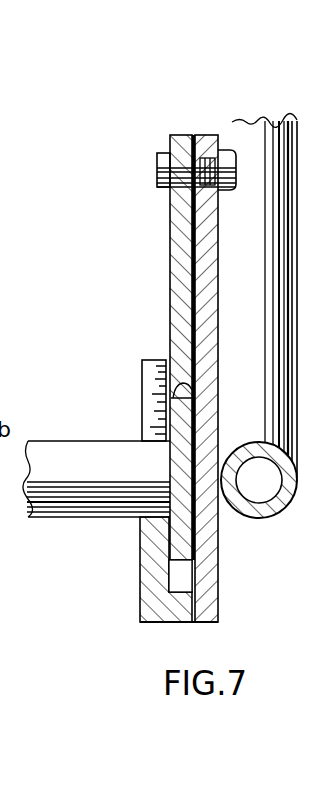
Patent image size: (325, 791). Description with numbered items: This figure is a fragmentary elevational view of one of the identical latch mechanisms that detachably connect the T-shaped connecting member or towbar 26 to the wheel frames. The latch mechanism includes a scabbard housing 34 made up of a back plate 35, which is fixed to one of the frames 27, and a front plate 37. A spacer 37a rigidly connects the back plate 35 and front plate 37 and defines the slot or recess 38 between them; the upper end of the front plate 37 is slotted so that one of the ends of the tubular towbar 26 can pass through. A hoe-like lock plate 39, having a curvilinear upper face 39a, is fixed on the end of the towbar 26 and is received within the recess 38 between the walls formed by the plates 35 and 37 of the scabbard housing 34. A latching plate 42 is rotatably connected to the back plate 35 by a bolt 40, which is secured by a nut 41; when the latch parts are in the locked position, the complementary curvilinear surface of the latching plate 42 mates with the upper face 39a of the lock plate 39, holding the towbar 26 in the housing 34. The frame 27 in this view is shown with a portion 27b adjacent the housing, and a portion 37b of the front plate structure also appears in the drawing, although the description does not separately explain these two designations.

The connecting member or towbar 26 is at (68, 504).
The frame 27 is at (259, 122).
The rod eye / ring 27b is at (258, 519).
The scabbard housing 34 is at (138, 569).
The back plate 35 is at (205, 230).
The front plate 37 is at (140, 528).
The spacer 37a is at (180, 612).
The bracket block 37b is at (150, 391).
The slot or recess 38 is at (176, 582).
The lock plate 39 is at (181, 529).
The curvilinear upper face 39a is at (180, 382).
The bolt 40 is at (200, 170).
The nut 41 is at (228, 160).
The latching plate 42 is at (175, 219).